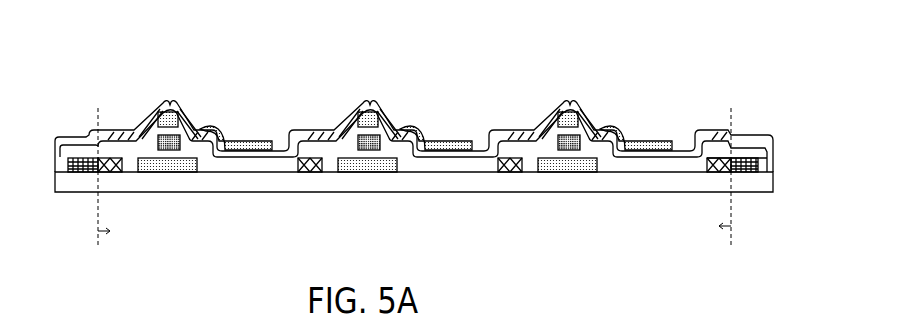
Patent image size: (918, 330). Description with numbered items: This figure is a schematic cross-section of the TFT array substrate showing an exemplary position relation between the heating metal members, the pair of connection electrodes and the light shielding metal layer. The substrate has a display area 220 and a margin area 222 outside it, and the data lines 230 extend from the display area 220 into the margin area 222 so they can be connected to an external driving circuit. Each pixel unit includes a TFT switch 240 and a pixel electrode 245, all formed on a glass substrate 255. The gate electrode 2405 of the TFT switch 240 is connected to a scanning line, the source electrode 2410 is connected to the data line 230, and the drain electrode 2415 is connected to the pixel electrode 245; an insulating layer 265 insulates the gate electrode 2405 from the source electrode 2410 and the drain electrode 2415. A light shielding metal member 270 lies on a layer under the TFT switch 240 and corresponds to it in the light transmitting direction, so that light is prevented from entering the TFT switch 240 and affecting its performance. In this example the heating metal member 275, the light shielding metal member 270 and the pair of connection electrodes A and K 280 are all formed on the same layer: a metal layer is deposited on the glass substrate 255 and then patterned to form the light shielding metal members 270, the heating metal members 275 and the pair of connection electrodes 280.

The display area 220 is at (414, 232).
The margin area 222 is at (98, 238).
The data line 230 is at (112, 132).
The TFT switch 240 is at (177, 86).
The gate electrode 2405 is at (173, 137).
The source electrode 2410 is at (150, 110).
The drain electrode 2415 is at (172, 103).
The pixel electrode 245 is at (241, 140).
The glass substrate 255 is at (64, 181).
The insulating layer 265 is at (87, 145).
The light shielding metal member 270 is at (173, 168).
The heating metal member 275 is at (112, 168).
The pair of connection electrodes A and K 280 is at (75, 168).